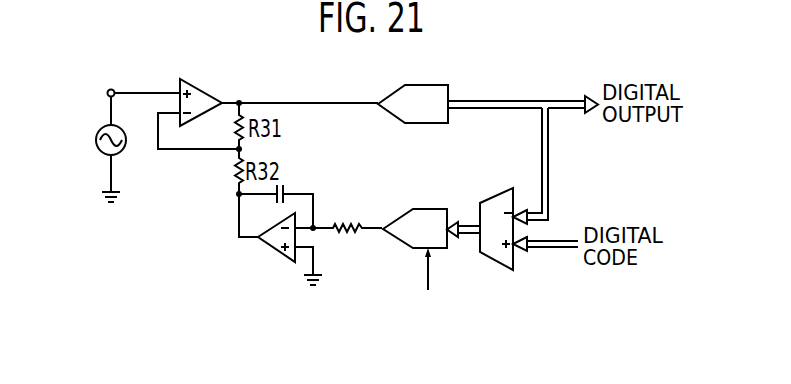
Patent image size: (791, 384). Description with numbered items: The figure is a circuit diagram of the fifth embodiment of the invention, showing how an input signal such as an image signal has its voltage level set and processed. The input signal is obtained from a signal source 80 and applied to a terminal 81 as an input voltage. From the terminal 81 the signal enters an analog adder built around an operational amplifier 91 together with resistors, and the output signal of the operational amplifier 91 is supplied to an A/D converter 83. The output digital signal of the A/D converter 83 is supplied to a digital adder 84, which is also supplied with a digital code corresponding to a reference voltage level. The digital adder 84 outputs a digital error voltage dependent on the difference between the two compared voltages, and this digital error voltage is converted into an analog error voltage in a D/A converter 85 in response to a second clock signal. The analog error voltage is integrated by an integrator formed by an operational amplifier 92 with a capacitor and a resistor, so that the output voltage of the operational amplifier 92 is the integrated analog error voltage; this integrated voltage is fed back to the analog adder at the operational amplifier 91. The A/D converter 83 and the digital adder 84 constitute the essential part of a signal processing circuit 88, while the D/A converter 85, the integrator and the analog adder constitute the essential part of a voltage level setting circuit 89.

The signal source 80 is at (100, 152).
The terminal 81 is at (107, 94).
The A/D converter 83 is at (423, 85).
The digital adder 84 is at (513, 265).
The D/A converter 85 is at (428, 209).
The signal processing circuit 88 is at (490, 94).
The voltage level setting circuit 89 is at (332, 192).
The operational amplifier 91 is at (200, 80).
The operational amplifier 92 is at (274, 254).